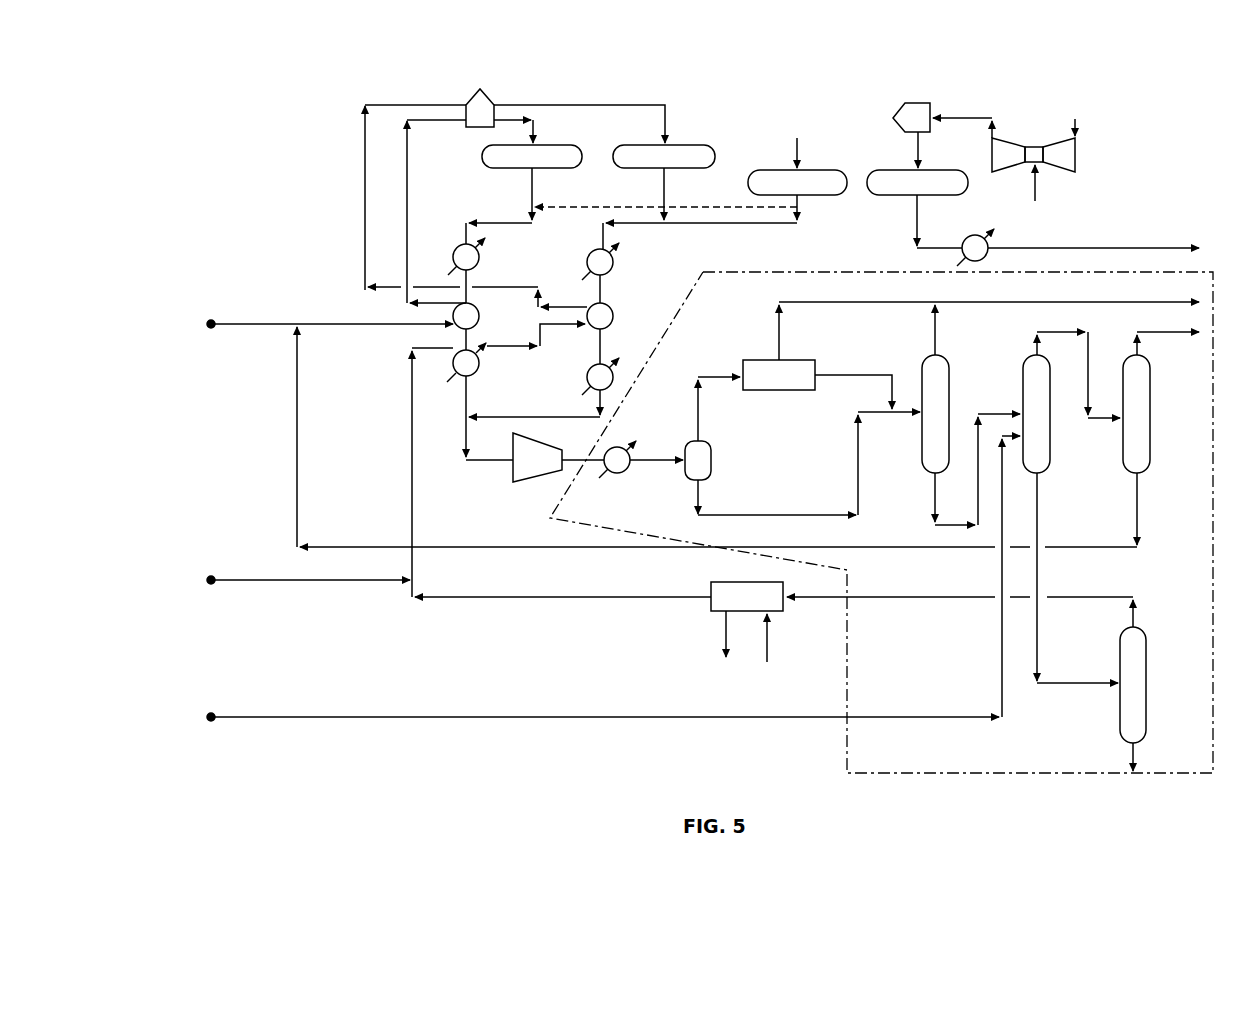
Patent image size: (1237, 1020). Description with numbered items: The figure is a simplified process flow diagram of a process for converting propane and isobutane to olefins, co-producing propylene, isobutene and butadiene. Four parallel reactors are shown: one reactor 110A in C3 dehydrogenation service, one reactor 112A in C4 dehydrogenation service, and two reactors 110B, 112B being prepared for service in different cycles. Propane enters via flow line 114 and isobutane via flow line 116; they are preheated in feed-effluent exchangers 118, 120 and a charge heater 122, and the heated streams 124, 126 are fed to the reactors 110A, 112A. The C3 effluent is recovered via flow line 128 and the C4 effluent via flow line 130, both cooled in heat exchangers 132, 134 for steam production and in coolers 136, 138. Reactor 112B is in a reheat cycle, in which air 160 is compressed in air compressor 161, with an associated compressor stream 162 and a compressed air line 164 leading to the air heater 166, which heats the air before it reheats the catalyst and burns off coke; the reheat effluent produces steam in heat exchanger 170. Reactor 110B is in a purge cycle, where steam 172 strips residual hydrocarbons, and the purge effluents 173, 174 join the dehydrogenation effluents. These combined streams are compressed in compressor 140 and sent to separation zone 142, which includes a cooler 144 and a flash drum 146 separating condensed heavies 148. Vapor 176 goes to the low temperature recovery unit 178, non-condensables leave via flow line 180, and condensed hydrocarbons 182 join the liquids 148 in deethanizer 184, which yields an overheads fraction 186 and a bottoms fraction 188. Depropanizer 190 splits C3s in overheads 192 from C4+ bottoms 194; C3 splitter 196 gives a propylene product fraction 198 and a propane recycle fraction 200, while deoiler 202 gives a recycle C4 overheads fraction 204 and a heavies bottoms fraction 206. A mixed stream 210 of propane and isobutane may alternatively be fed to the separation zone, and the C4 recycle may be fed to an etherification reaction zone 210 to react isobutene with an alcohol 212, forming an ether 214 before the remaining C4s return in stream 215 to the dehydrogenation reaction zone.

The C3 dehydrogenation reactor 110A is at (532, 156).
The C3 dehydrogenation reactor 110B is at (797, 182).
The C4 dehydrogenation reactor 112A is at (664, 156).
The C4 dehydrogenation reactor 112B is at (917, 182).
The flow line 114 is at (260, 323).
The flow line 116 is at (272, 580).
The feed-effluent exchanger 118 is at (480, 318).
The feed-effluent exchanger 120 is at (612, 318).
The charge heater 122 is at (470, 93).
The heated stream 124 is at (538, 131).
The heated stream 126 is at (568, 105).
The flow line 128 is at (526, 186).
The flow line 130 is at (660, 182).
The heat exchanger 132 is at (455, 247).
The heat exchanger 134 is at (613, 275).
The cooler 136 is at (478, 374).
The cooler 138 is at (588, 370).
The compressor 140 is at (486, 384).
The separation zone 142 is at (549, 515).
The cooler 144 is at (628, 474).
The flash drum 146 is at (713, 460).
The condensed heavies 148 is at (808, 512).
The air 160 is at (1078, 124).
The air compressor 161 is at (1054, 142).
The turbine stream 162 is at (1038, 188).
The stream 164 is at (965, 118).
The air heater 166 is at (900, 104).
The heat exchanger 170 is at (966, 238).
The steam 172 is at (793, 147).
The purge effluent 173 is at (568, 212).
The purge effluent 174 is at (745, 226).
The vapor 176 is at (710, 376).
The low temperature recovery unit 178 is at (779, 375).
The flow line 180 is at (777, 330).
The condensed hydrocarbons 182 is at (864, 374).
The deethanizer 184 is at (935, 414).
The overheads fraction 186 is at (934, 336).
The bottoms fraction 188 is at (1000, 412).
The depropanizer 190 is at (1036, 414).
The overheads 192 is at (1034, 346).
The bottoms 194 is at (1040, 510).
The C3 splitter 196 is at (1136, 414).
The propylene product fraction 198 is at (1133, 347).
The propane recycle fraction 200 is at (1138, 503).
The deoiler 202 is at (1133, 685).
The overheads fraction 204 is at (1090, 597).
The bottoms fraction 206 is at (1130, 760).
The etherification reaction zone 210 is at (272, 716).
The alcohol 212 is at (770, 640).
The ether 214 is at (722, 634).
The stream 215 is at (510, 596).